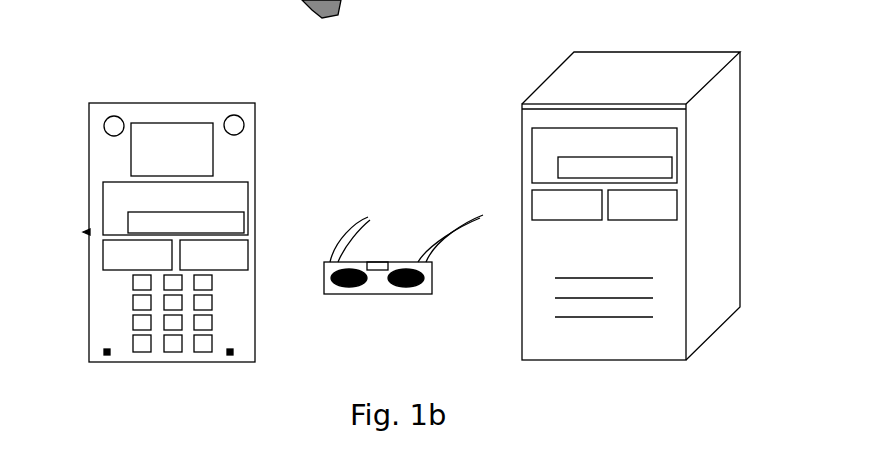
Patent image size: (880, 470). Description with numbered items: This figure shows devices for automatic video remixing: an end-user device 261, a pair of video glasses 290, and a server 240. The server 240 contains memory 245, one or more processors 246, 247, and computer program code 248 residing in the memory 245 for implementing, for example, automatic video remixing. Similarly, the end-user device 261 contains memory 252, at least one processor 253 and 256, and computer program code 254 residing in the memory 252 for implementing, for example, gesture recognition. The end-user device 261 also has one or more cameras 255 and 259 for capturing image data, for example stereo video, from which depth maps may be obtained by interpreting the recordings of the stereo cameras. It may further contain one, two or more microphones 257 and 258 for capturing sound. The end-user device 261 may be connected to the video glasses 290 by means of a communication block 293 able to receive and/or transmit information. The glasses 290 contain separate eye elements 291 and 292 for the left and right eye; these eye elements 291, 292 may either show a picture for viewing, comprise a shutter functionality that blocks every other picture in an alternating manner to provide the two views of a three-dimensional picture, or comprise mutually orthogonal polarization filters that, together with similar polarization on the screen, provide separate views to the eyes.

The server 240 is at (645, 77).
The memory 245 is at (532, 172).
The processor 246 is at (532, 211).
The processor 247 is at (677, 205).
The computer program code 248 is at (672, 166).
The memory 252 is at (103, 182).
The processor 253 is at (103, 256).
The computer program code 254 is at (248, 226).
The camera 255 is at (114, 115).
The processor 256 is at (248, 262).
The microphone 257 is at (231, 346).
The microphone 258 is at (107, 346).
The camera 259 is at (234, 114).
The mobile device 261 is at (258, 133).
The video glasses 290 is at (357, 212).
The eye element 291 is at (345, 296).
The eye element 292 is at (400, 296).
The communication block 293 is at (377, 262).